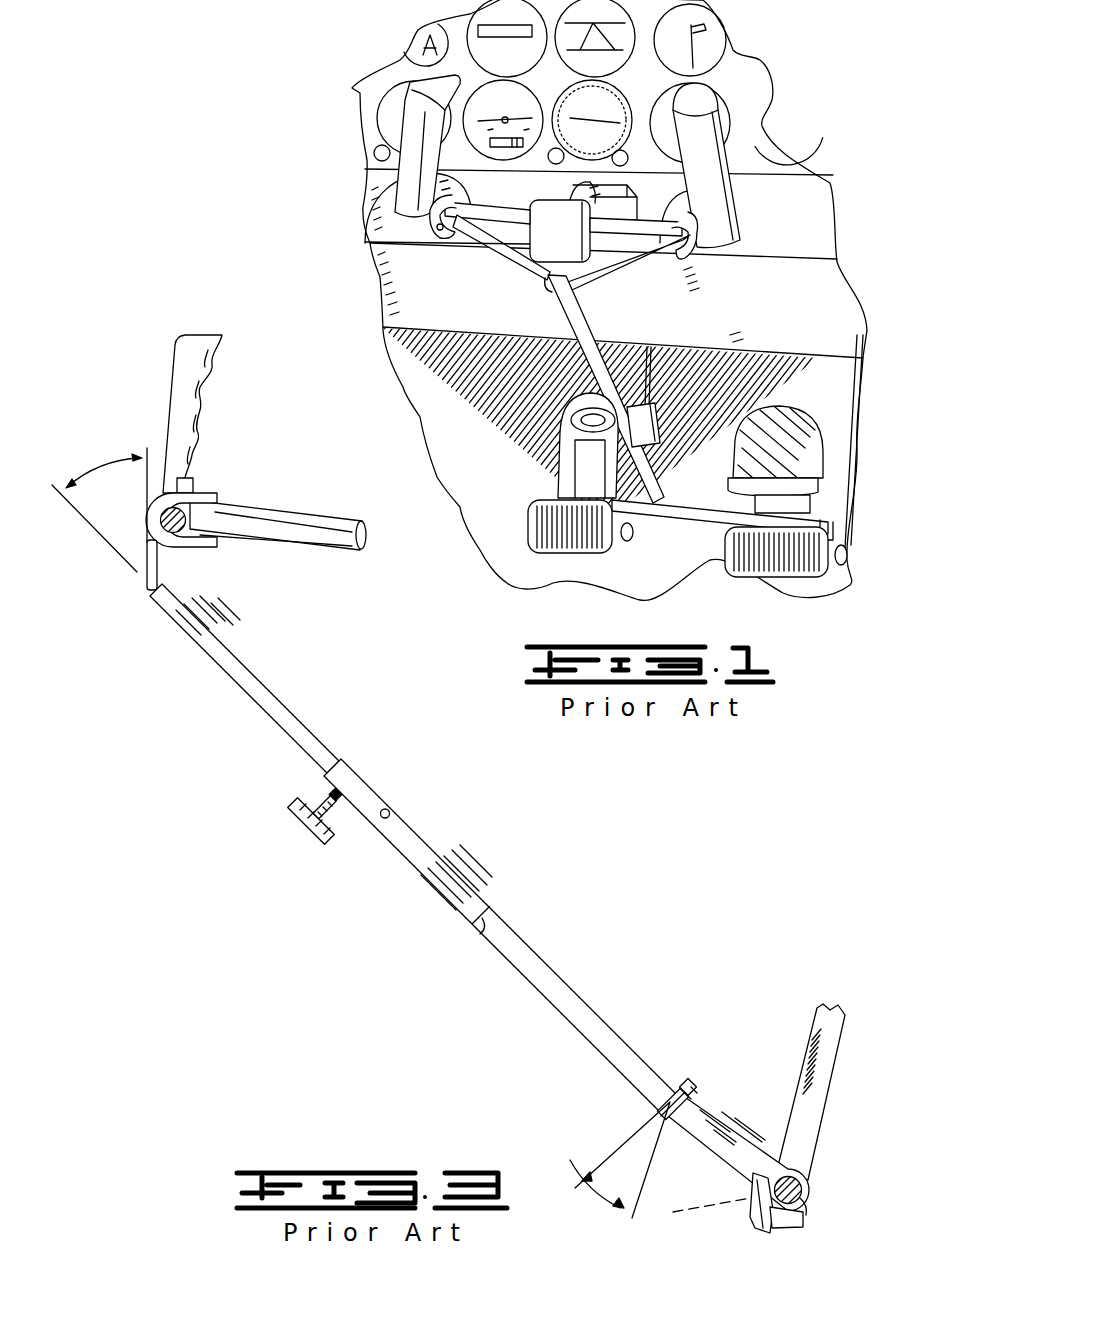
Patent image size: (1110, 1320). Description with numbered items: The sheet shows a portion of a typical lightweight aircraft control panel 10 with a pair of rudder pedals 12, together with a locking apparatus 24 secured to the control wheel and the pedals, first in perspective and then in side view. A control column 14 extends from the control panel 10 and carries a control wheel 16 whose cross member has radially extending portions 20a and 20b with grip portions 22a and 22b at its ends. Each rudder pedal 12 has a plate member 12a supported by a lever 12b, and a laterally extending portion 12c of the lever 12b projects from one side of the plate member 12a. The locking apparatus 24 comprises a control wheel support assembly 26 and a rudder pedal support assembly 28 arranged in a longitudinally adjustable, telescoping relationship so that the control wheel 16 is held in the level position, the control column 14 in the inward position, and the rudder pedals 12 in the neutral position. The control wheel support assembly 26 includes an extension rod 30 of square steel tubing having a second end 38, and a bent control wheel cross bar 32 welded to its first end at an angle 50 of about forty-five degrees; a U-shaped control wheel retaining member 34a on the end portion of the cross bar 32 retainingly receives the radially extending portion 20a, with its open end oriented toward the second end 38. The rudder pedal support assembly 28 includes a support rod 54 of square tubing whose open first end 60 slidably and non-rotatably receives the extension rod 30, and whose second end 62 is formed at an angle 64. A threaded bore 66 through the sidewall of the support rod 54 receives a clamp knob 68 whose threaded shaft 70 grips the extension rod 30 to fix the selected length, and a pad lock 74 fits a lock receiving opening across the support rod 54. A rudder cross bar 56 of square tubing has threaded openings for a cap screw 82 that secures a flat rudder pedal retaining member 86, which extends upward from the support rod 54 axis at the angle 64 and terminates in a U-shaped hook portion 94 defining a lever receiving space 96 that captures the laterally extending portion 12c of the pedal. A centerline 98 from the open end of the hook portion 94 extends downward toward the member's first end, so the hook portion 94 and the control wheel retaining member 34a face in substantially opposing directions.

In FIG. 1, the aircraft control panel 10 is at (835, 188).
In FIG. 1, the rudder pedals 12 is at (560, 585).
In FIG. 3, the rudder pedals 12 is at (742, 1207).
In FIG. 1, the plate member 12a is at (530, 520).
In FIG. 1, the lever 12b is at (668, 365).
In FIG. 1, the laterally extending portion 12c is at (628, 545).
In FIG. 3, the laterally extending portion 12c is at (803, 1215).
In FIG. 1, the control column 14 is at (578, 188).
In FIG. 3, the control column 14 is at (313, 517).
In FIG. 1, the control wheel 16 is at (390, 247).
In FIG. 3, the control wheel 16 is at (167, 385).
In FIG. 1, the radially extending portion 20a is at (687, 212).
In FIG. 3, the radially extending portion 20a is at (213, 507).
In FIG. 1, the radially extending portion 20b is at (430, 206).
In FIG. 1, the grip portion 22a is at (703, 120).
In FIG. 1, the grip portion 22b is at (380, 117).
In FIG. 1, the locking apparatus 24 is at (550, 313).
In FIG. 3, the locking apparatus 24 is at (414, 849).
In FIG. 3, the control wheel support assembly 26 is at (266, 678).
In FIG. 3, the rudder pedal support assembly 28 is at (681, 1069).
In FIG. 3, the extension rod 30 is at (258, 670).
In FIG. 3, the control wheel cross bar 32 is at (162, 568).
In FIG. 3, the control wheel retaining member 34a is at (200, 540).
In FIG. 3, the second end 38 is at (478, 940).
In FIG. 3, the angle 50 is at (104, 468).
In FIG. 3, the support rod 54 is at (501, 931).
In FIG. 3, the rudder cross bar 56 is at (664, 1067).
In FIG. 3, the first end 60 is at (355, 767).
In FIG. 3, the second end 62 is at (672, 1090).
In FIG. 3, the angle 64 is at (566, 1163).
In FIG. 3, the threaded bore 66 is at (343, 803).
In FIG. 3, the clamp knob 68 is at (291, 816).
In FIG. 3, the threaded shaft 70 is at (330, 790).
In FIG. 1, the pad lock 74 is at (648, 598).
In FIG. 3, the cap screw 82 is at (697, 1080).
In FIG. 3, the rudder pedal retaining member 86 is at (710, 1143).
In FIG. 3, the hook portion 94 is at (826, 1187).
In FIG. 3, the lever receiving space 96 is at (757, 1228).
In FIG. 3, the centerline 98 is at (690, 1212).